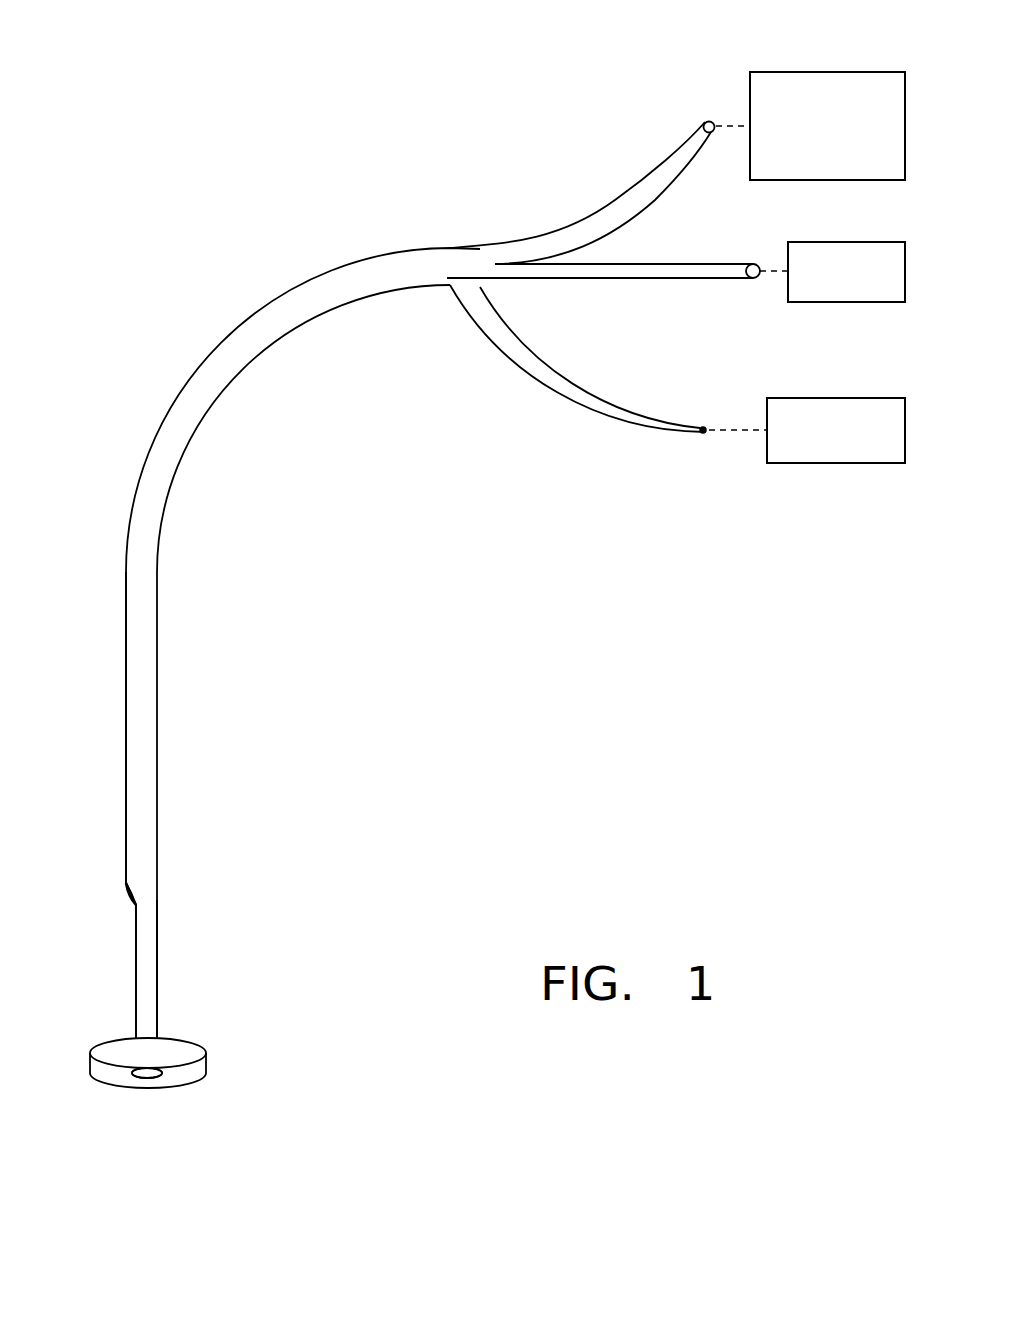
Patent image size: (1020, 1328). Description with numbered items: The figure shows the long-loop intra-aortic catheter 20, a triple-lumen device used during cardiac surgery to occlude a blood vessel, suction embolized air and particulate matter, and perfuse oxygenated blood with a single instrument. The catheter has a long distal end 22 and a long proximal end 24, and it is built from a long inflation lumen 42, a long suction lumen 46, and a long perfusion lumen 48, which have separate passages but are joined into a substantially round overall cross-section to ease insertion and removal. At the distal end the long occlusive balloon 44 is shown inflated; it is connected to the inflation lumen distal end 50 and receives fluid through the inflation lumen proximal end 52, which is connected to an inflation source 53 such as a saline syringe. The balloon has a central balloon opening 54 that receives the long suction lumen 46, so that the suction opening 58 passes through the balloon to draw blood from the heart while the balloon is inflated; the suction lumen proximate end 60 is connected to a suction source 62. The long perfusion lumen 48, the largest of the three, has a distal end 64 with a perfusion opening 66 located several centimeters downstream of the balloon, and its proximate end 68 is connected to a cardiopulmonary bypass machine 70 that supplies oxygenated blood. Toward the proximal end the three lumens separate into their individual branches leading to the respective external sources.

The long-loop intra-aortic catheter 20 is at (457, 156).
The long distal end 22 is at (96, 1105).
The long proximal end 24 is at (548, 405).
The long inflation lumen 42 is at (613, 327).
The long occlusive balloon 44 is at (224, 1040).
The long suction lumen 46 is at (623, 262).
The long perfusion lumen 48 is at (552, 236).
The long inflation lumen distal end 50 is at (157, 1015).
The long inflation lumen proximal end 52 is at (702, 433).
The inflation source 53 is at (820, 398).
The central balloon opening 54 is at (160, 1077).
The suction opening 58 is at (147, 1125).
The long suction lumen proximate end 60 is at (756, 265).
The suction source 62 is at (838, 241).
The long perfusion lumen distal end 64 is at (126, 822).
The perfusion opening 66 is at (127, 897).
The long perfusion lumen proximate end 68 is at (705, 120).
The cardiopulmonary bypass machine 70 is at (803, 72).